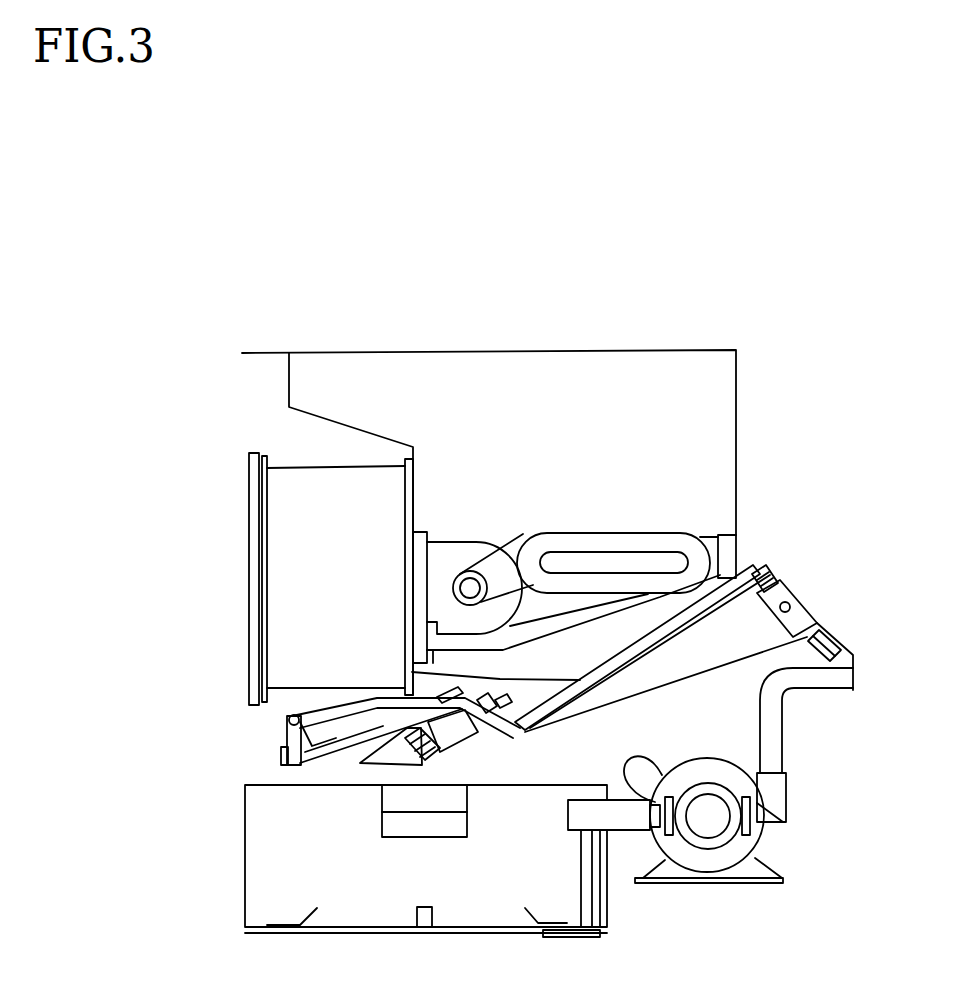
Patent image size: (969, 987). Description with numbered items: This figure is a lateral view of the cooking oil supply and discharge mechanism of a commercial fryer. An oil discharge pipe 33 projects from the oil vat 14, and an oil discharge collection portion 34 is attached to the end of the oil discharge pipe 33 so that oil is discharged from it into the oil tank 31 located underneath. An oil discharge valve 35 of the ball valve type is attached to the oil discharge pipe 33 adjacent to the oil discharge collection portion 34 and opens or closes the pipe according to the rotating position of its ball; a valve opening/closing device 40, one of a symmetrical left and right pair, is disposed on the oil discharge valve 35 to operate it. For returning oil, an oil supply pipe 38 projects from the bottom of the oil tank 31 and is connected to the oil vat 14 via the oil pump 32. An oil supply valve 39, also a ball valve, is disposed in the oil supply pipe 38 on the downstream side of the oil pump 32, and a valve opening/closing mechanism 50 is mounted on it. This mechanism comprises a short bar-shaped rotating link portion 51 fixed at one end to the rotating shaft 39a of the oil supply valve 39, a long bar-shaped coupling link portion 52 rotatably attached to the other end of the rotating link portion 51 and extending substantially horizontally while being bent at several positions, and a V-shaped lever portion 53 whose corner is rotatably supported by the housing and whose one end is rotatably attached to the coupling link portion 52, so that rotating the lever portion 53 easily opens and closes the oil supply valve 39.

The oil vat 14 is at (559, 350).
The oil tank 31 is at (245, 855).
The oil pump 32 is at (760, 850).
The oil discharge pipe 33 is at (493, 707).
The oil discharge collection portion 34 is at (383, 770).
The oil discharge valve 35 is at (457, 744).
The oil supply pipe 38 is at (783, 731).
The oil supply valve 39 is at (787, 573).
The rotating shaft 39a is at (790, 597).
The valve opening/closing device 40 is at (347, 762).
The valve opening/closing mechanism 50 is at (720, 678).
The rotating link portion 51 is at (813, 612).
The coupling link portion 52 is at (652, 683).
The lever portion 53 is at (287, 740).